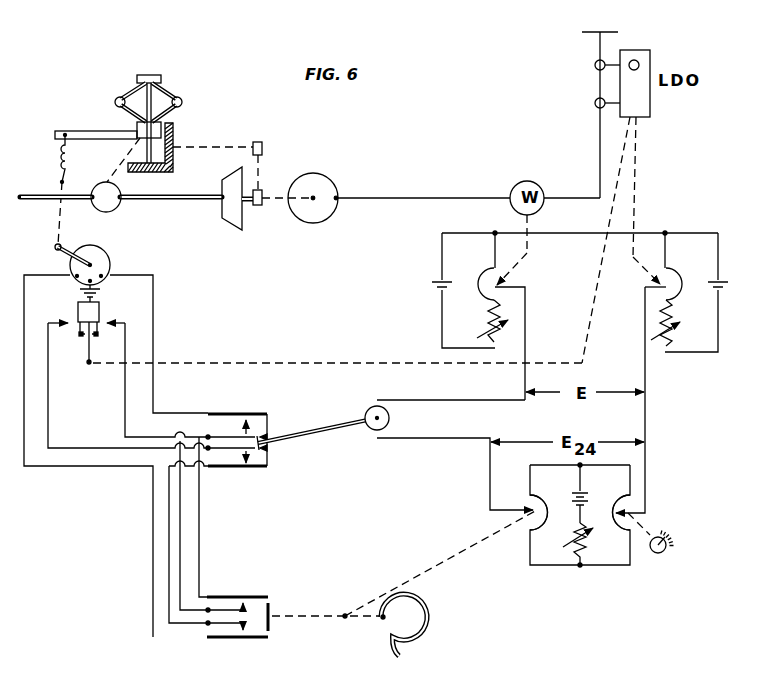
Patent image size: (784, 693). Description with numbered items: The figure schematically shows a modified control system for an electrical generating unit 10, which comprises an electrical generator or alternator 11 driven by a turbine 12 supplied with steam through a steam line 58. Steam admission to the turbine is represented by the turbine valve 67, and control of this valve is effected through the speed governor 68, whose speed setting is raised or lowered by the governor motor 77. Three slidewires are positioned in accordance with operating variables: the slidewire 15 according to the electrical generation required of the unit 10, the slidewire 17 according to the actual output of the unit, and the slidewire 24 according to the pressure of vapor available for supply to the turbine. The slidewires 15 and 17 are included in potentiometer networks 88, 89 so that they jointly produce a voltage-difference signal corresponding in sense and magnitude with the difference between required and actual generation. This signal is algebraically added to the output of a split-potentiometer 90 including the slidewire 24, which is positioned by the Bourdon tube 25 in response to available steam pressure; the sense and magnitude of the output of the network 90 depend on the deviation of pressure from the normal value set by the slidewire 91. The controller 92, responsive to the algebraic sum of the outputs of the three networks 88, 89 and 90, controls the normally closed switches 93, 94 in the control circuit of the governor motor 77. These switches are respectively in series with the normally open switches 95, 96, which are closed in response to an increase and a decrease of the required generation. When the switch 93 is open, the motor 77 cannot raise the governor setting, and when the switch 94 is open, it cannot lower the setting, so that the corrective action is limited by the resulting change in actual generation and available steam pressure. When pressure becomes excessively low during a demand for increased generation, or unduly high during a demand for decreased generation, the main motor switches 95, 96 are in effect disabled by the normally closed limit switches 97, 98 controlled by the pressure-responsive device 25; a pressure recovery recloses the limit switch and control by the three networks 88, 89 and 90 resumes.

The speed governor 68 is at (103, 79).
The steam line 58 is at (23, 190).
The turbine valve 67 is at (114, 206).
The turbine 12 is at (227, 187).
The electrical generating unit 10 is at (280, 248).
The electrical generator or alternator 11 is at (318, 180).
The slidewire 17 is at (490, 284).
The slidewire 15 is at (666, 282).
The potentiometer network 88 is at (480, 321).
The potentiometer network 89 is at (680, 323).
The governor motor 77 is at (111, 266).
The normally open switch 96 is at (78, 311).
The normally open switch 95 is at (100, 311).
The normally closed switch 93 is at (240, 411).
The normally closed switch 94 is at (225, 469).
The controller 92 is at (368, 411).
The split-potentiometer 90 is at (568, 487).
The slidewire 91 is at (620, 498).
The slidewire 24 is at (545, 502).
The normally closed limit switch 97 is at (229, 596).
The normally closed limit switch 98 is at (229, 638).
The Bourdon tube 25 is at (425, 623).